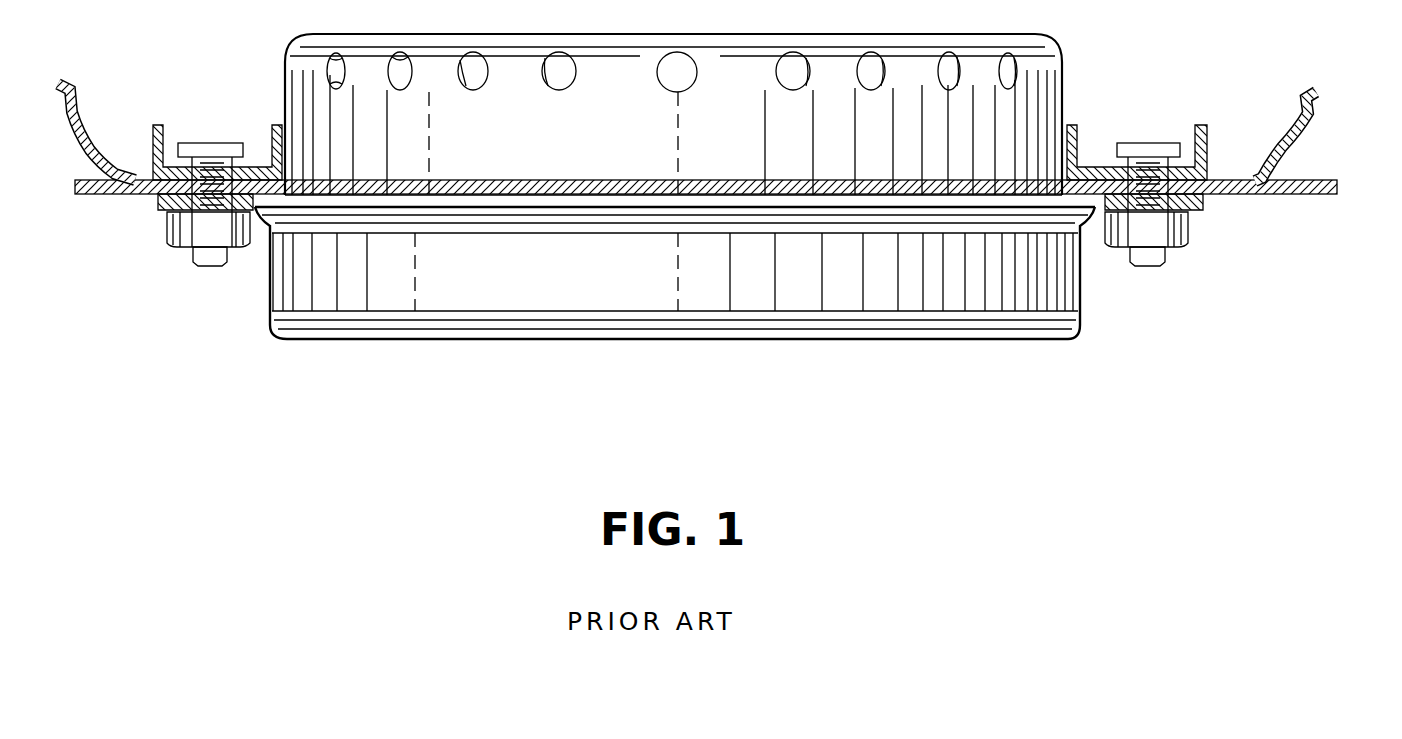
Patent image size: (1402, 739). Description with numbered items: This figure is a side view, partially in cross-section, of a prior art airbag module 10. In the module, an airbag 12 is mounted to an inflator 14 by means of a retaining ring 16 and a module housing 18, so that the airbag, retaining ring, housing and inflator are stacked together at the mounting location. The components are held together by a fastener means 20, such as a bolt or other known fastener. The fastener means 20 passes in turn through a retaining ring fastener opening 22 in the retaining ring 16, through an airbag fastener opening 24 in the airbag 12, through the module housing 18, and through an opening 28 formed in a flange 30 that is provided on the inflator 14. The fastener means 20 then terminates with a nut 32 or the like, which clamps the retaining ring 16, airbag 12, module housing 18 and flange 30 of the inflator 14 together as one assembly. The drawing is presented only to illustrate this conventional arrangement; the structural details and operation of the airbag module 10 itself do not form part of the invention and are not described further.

The airbag module 10 is at (1150, 122).
The airbag 12 is at (1317, 90).
The inflator 14 is at (625, 317).
The retaining ring 16 is at (1193, 127).
The module housing 18 is at (1343, 185).
The fastener means 20 is at (1135, 142).
The retaining ring fastener opening 22 is at (190, 156).
The airbag fastener opening 24 is at (177, 194).
The opening 28 is at (183, 203).
The flange 30 is at (1210, 197).
The nut 32 is at (1175, 237).